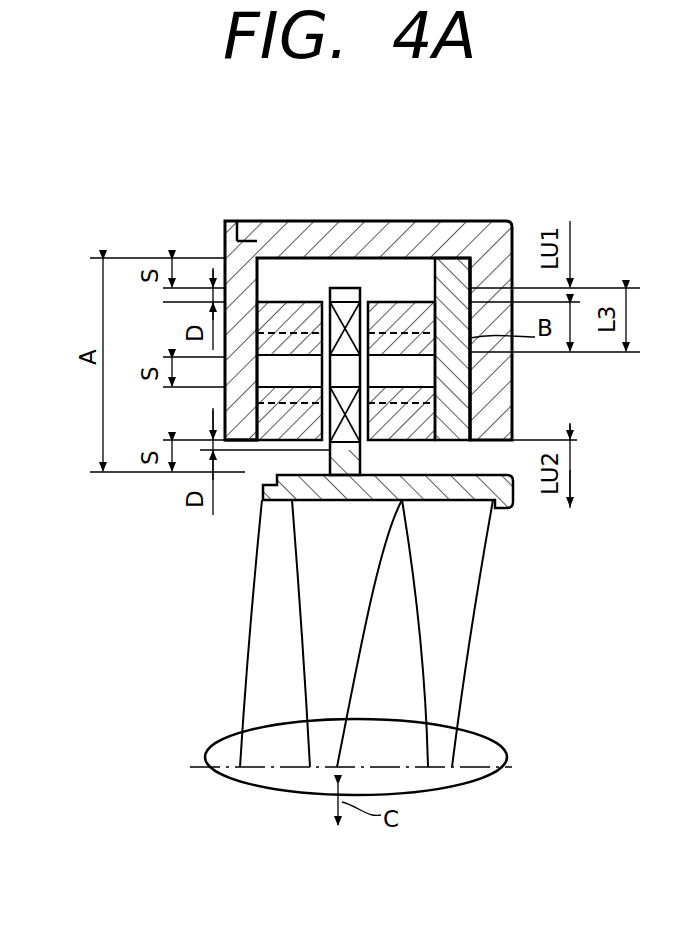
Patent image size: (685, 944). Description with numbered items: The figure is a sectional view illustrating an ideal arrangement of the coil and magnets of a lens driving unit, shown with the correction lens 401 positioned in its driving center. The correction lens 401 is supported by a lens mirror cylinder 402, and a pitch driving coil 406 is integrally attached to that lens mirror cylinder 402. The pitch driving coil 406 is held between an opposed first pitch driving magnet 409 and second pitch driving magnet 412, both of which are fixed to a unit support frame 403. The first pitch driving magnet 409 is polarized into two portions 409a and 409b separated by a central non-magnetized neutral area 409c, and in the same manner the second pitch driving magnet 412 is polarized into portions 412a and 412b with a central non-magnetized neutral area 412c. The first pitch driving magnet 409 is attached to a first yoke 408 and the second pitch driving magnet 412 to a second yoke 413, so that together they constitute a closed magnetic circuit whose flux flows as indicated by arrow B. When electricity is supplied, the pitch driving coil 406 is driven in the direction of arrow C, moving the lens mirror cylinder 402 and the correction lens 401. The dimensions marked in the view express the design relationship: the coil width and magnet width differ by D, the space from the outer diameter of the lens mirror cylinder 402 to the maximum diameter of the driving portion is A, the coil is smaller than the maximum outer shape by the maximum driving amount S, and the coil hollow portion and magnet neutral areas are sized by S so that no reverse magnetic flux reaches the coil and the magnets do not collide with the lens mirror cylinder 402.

The correction lens 401 is at (502, 752).
The lens mirror cylinder 402 is at (513, 508).
The unit support frame 403 is at (252, 227).
The pitch driving coil 406 is at (347, 325).
The first yoke 408 is at (482, 226).
The first pitch driving magnet 409 is at (380, 302).
The polarized portion of first pitch driving magnet 409a is at (445, 272).
The polarized portion of first pitch driving magnet 409b is at (385, 441).
The central non-magnetized neutral area 409c is at (402, 370).
The second pitch driving magnet 412 is at (280, 302).
The polarized portion of second pitch driving magnet 412a is at (303, 320).
The polarized portion of second pitch driving magnet 412b is at (260, 402).
The central non-magnetized neutral area 412c is at (303, 367).
The second yoke 413 is at (225, 243).